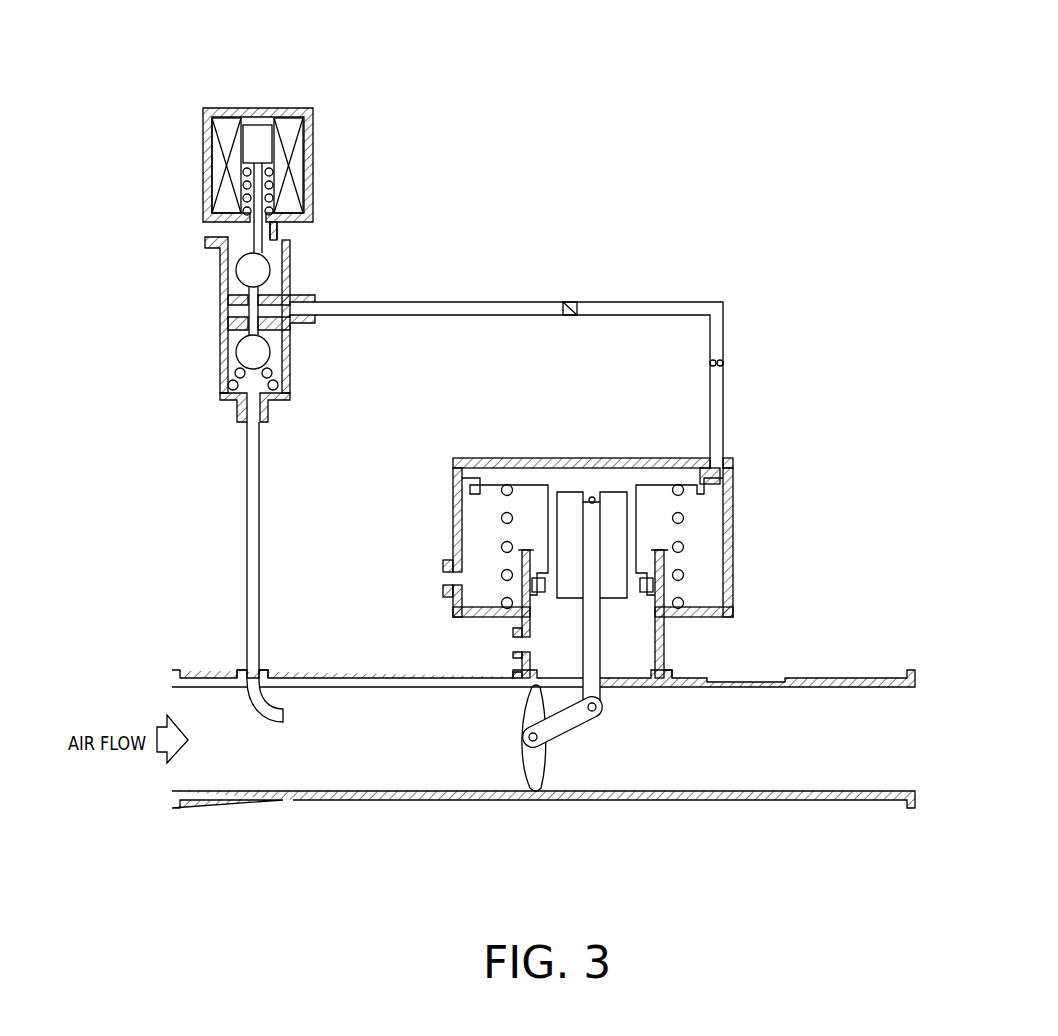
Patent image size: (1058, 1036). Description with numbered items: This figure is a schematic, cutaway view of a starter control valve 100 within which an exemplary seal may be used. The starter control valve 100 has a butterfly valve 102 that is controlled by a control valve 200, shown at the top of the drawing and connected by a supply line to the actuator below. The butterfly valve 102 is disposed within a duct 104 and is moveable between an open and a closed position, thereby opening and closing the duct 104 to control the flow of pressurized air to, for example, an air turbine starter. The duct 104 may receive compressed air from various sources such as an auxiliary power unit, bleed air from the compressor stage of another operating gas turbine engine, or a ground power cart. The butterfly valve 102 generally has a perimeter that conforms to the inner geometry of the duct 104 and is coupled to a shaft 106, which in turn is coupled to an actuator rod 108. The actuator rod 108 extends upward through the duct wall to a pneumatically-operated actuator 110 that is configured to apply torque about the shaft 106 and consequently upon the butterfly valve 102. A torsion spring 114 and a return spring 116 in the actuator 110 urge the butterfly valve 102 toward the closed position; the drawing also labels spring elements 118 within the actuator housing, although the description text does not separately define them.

The starter control valve 100 is at (532, 366).
The control valve 200 is at (519, 331).
The pneumatically-operated actuator 110 is at (588, 516).
The springs 118 is at (486, 458).
The return spring 116 is at (500, 546).
The actuator rod 108 is at (590, 660).
The duct 104 is at (290, 782).
The butterfly valve 102 is at (604, 738).
The shaft 106 is at (588, 731).
The torsion spring 114 is at (548, 712).